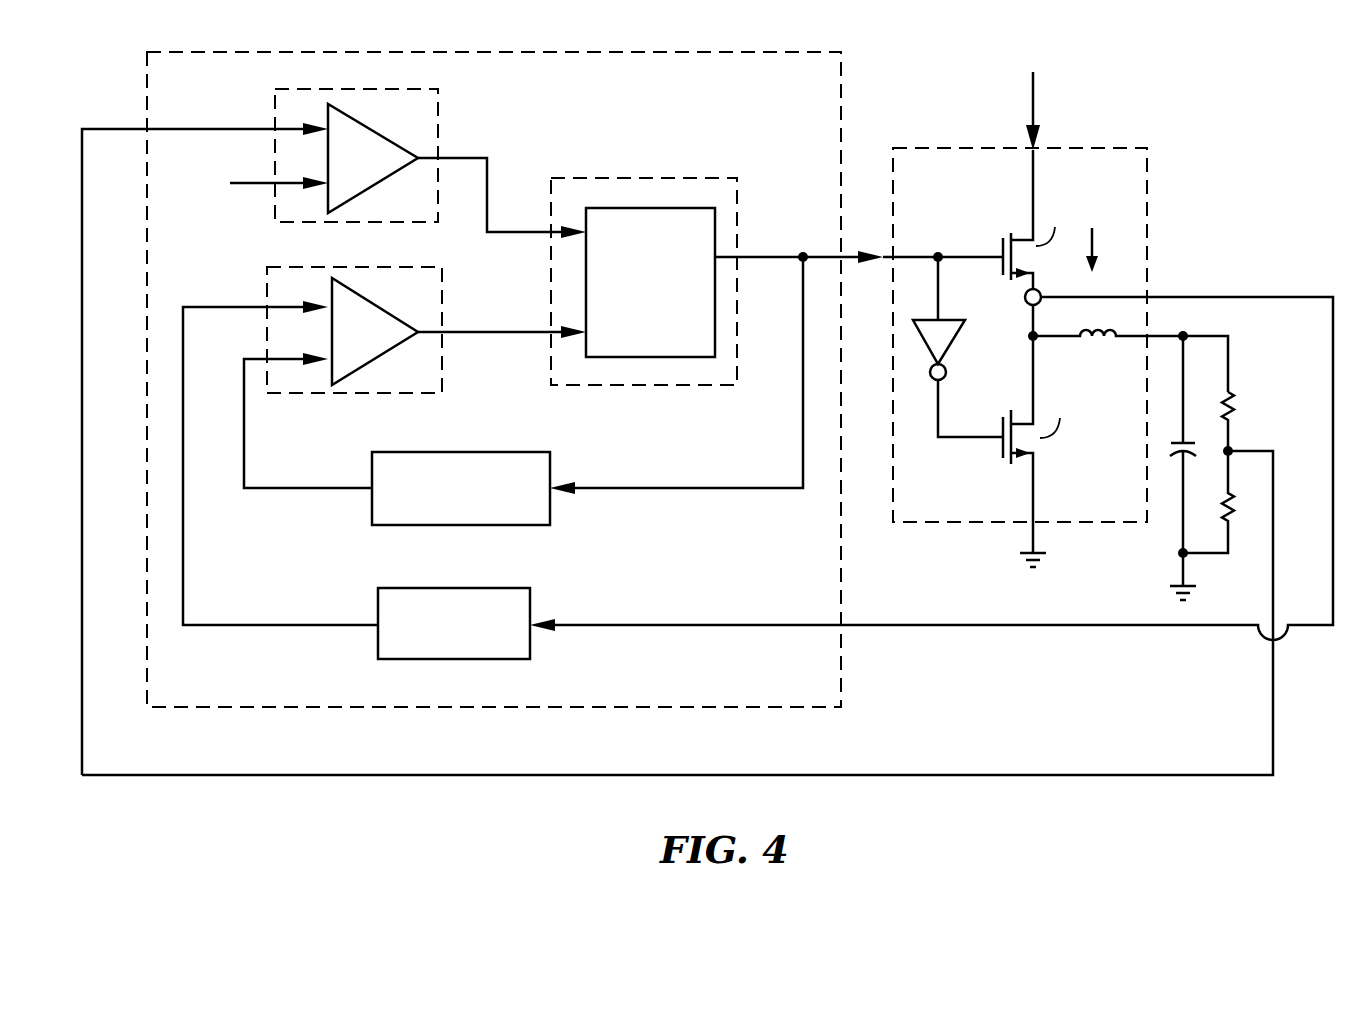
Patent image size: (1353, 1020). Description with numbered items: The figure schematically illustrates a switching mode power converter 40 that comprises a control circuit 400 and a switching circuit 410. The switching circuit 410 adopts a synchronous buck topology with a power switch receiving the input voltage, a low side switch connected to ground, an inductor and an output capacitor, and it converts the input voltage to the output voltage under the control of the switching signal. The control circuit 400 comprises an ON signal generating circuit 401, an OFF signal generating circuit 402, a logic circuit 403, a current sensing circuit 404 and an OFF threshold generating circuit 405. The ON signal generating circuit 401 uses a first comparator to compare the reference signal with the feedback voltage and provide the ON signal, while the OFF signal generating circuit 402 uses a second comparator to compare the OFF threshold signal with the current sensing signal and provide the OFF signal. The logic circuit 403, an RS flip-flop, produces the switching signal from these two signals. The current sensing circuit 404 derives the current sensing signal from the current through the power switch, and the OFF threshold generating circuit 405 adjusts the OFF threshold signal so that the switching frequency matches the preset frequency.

The switching mode power converter 40 is at (1263, 120).
The control circuit 400 is at (845, 97).
The ON signal generating circuit 401 is at (440, 117).
The OFF signal generating circuit 402 is at (443, 280).
The logic circuit 403 is at (594, 386).
The current sensing circuit 404 is at (460, 662).
The OFF threshold generating circuit 405 is at (460, 526).
The switching circuit 410 is at (1149, 168).